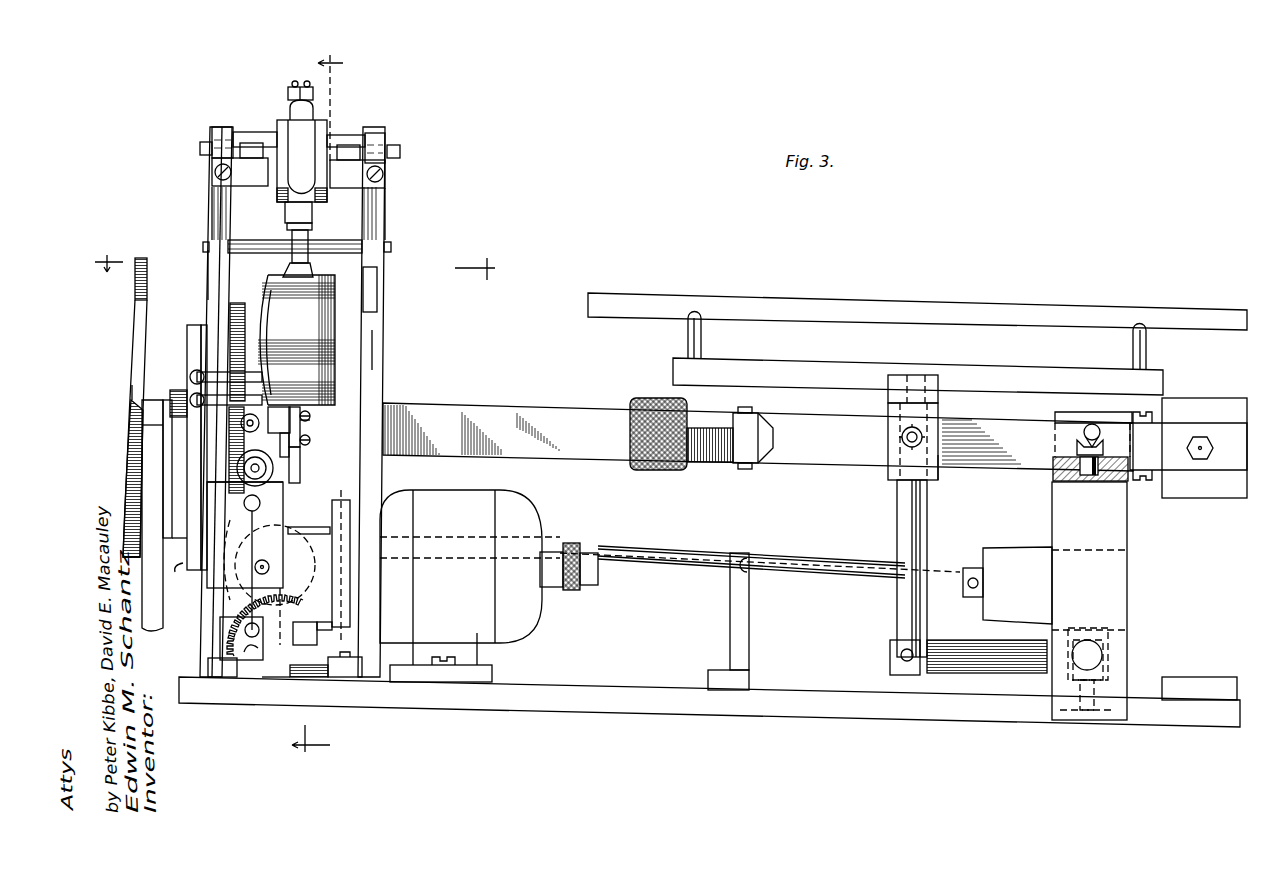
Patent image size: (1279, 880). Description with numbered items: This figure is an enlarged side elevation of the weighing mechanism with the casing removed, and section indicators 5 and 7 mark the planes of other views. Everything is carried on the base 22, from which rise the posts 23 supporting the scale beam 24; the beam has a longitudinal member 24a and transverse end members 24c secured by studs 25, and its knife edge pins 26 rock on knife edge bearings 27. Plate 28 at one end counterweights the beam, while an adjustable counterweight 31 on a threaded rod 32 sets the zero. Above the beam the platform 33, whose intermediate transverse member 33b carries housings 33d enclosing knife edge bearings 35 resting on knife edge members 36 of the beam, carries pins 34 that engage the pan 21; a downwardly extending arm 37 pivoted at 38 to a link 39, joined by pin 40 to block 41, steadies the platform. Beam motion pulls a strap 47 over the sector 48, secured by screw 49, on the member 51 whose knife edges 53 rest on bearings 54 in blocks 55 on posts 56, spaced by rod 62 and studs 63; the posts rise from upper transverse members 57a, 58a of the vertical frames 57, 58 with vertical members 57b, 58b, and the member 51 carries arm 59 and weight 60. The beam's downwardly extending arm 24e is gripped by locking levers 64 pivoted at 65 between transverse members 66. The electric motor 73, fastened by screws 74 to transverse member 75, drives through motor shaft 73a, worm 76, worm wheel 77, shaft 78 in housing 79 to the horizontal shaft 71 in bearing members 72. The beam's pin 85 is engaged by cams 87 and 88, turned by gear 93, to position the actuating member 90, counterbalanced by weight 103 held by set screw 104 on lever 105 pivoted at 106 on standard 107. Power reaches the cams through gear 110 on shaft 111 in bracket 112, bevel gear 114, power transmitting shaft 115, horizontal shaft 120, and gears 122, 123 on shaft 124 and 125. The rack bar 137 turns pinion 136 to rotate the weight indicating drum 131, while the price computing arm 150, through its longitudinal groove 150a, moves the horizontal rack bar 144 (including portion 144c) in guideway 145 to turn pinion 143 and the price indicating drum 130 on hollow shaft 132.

The section line 5- 5 is at (317, 407).
The section line 7- 7 is at (294, 268).
The pan or tray 21 is at (996, 306).
The base 22 is at (838, 715).
The posts or standards 23 is at (1125, 530).
The scale beam 24 is at (733, 463).
The longitudinal member 24a is at (523, 405).
The transverse end members 24c is at (758, 430).
The downwardly extending arm 24e is at (300, 500).
The studs 25 is at (745, 470).
The knife edge pins or bearing members 26 is at (1092, 424).
The knife edge bearings 27 is at (1083, 440).
The plate 28 is at (1222, 467).
The adjustable counterweight 31 is at (645, 398).
The rod 32 is at (706, 428).
The platform 33 is at (806, 370).
The intermediate transverse member 33b is at (910, 383).
The downward extensions or housings 33d is at (940, 468).
The upwardly extending pins 34 is at (688, 335).
The knife edge bearings 35 is at (922, 432).
The knife edge members 36 is at (888, 465).
The downwardly extending arm 37 is at (897, 600).
The pivot 38 is at (900, 655).
The horizontally extending link 39 is at (960, 645).
The pin 40 is at (1082, 640).
The block 41 is at (1110, 683).
The strap 47 is at (312, 92).
The sector 48 is at (290, 108).
The screw 49 is at (293, 84).
The member 51 is at (320, 120).
The knife edges 53 is at (258, 133).
The knife edge bearings 54 is at (220, 128).
The blocks 55 is at (212, 168).
The posts 56 is at (212, 200).
The vertical frame 57 is at (208, 285).
The upper transverse frame member 57a is at (225, 278).
The vertical frame member 57b is at (203, 322).
The vertical frame 58 is at (390, 330).
The upper transverse frame member 58a is at (378, 275).
The vertical frame member 58b is at (375, 350).
The arm 59 is at (292, 250).
The weight 60 is at (296, 340).
The rod 62 is at (350, 242).
The studs 63 is at (204, 243).
The locking levers 64 is at (278, 677).
The pivot 65 is at (312, 677).
The transverse members 66 is at (345, 663).
The horizontal shaft 71 is at (250, 636).
The bearing members 72 is at (220, 642).
The electric motor 73 is at (540, 520).
The motor shaft 73a is at (466, 548).
The screws 74 is at (440, 657).
The transverse member 75 is at (492, 670).
The worm 76 is at (470, 526).
The worm wheel 77 is at (318, 634).
The shaft 78 is at (320, 588).
The housing 79 is at (322, 607).
The laterally projecting pin 85 is at (240, 445).
The cam 87 is at (265, 325).
The cam 88 is at (240, 460).
The actuating member 90 is at (200, 345).
The gear 93 is at (240, 303).
The weight 103 is at (1013, 552).
The set screw 104 is at (970, 568).
The lever 105 is at (835, 560).
The pivot 106 is at (733, 572).
The standard 107 is at (735, 626).
The gear 110 is at (241, 491).
The shaft 111 is at (300, 462).
The bracket 112 is at (290, 455).
The bevel gear 114 is at (295, 470).
The power transmitting shaft 115 is at (295, 483).
The horizontal shaft 120 is at (260, 503).
The gear 122 is at (240, 541).
The intermediate gear 123 is at (238, 596).
The shaft 124 is at (256, 566).
The gear 125 is at (285, 608).
The price indicating drum 130 is at (140, 258).
The weight indicating drum 131 is at (138, 556).
The hollow shaft 132 is at (163, 405).
The pinion 136 is at (170, 392).
The rack bar 137 is at (190, 355).
The pinion 143 is at (310, 421).
The horizontal rack bar 144 is at (134, 410).
The hatched strip 144c is at (133, 480).
The guideway 145 is at (310, 445).
The price computing arm 150 is at (183, 508).
The longitudinal groove 150a is at (180, 574).